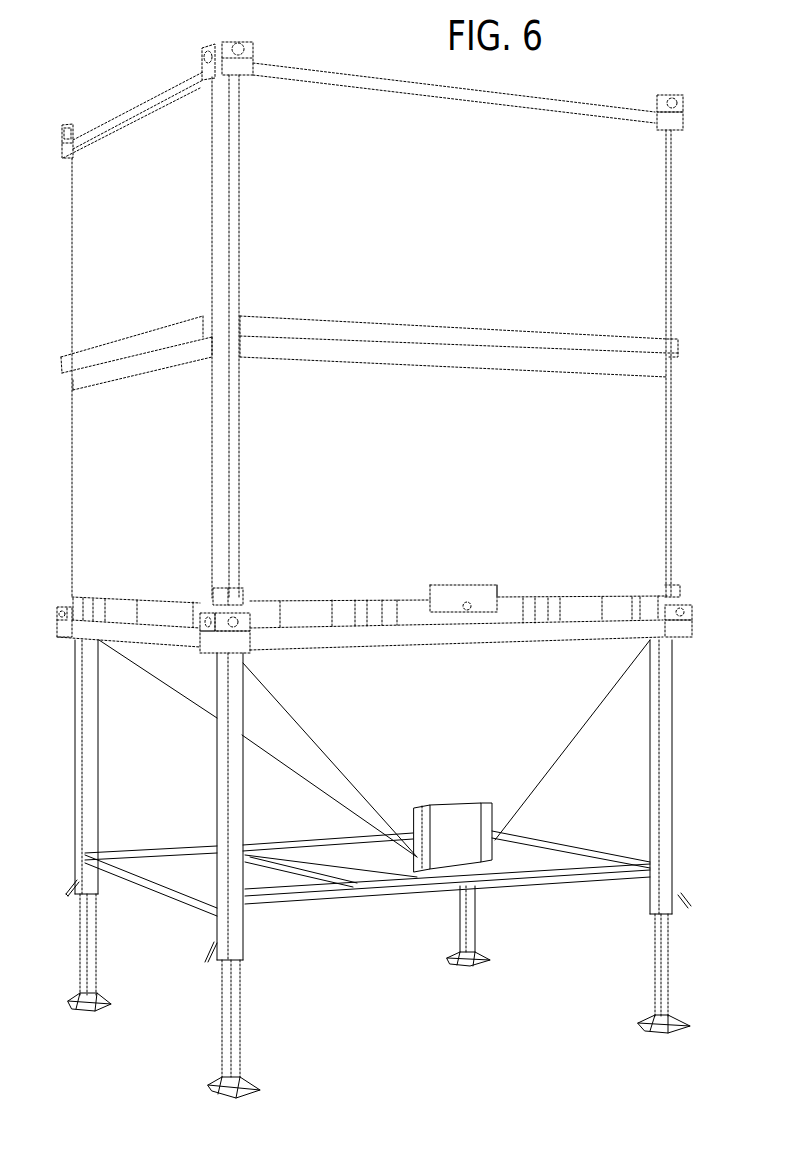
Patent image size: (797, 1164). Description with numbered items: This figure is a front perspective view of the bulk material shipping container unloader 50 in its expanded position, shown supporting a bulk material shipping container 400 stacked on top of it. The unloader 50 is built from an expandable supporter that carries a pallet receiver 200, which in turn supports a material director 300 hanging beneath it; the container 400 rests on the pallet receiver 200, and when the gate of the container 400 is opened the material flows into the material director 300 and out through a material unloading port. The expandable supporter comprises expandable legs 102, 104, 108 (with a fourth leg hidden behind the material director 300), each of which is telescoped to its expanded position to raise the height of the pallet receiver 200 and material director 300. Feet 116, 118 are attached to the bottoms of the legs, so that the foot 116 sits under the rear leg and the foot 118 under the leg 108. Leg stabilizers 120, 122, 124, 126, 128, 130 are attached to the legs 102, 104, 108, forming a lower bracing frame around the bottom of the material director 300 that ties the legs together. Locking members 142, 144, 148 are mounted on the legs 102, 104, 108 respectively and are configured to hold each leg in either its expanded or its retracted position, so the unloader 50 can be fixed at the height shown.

The bulk material shipping container unloader 50 is at (381, 841).
The bulk material shipping container 400 is at (683, 241).
The pallet receiver 200 is at (170, 688).
The material director 300 is at (562, 766).
The expandable leg 102 is at (243, 790).
The expandable leg 104 is at (673, 797).
The expandable leg 108 is at (97, 757).
The foot 116 is at (478, 962).
The foot 118 is at (105, 1000).
The leg stabilizer 120 is at (418, 893).
The leg stabilizer 122 is at (167, 850).
The leg stabilizer 124 is at (577, 842).
The leg stabilizer 126 is at (495, 862).
The leg stabilizer 128 is at (287, 873).
The leg stabilizer 130 is at (152, 890).
The locking member 142 is at (250, 940).
The locking member 144 is at (690, 900).
The locking member 148 is at (70, 880).